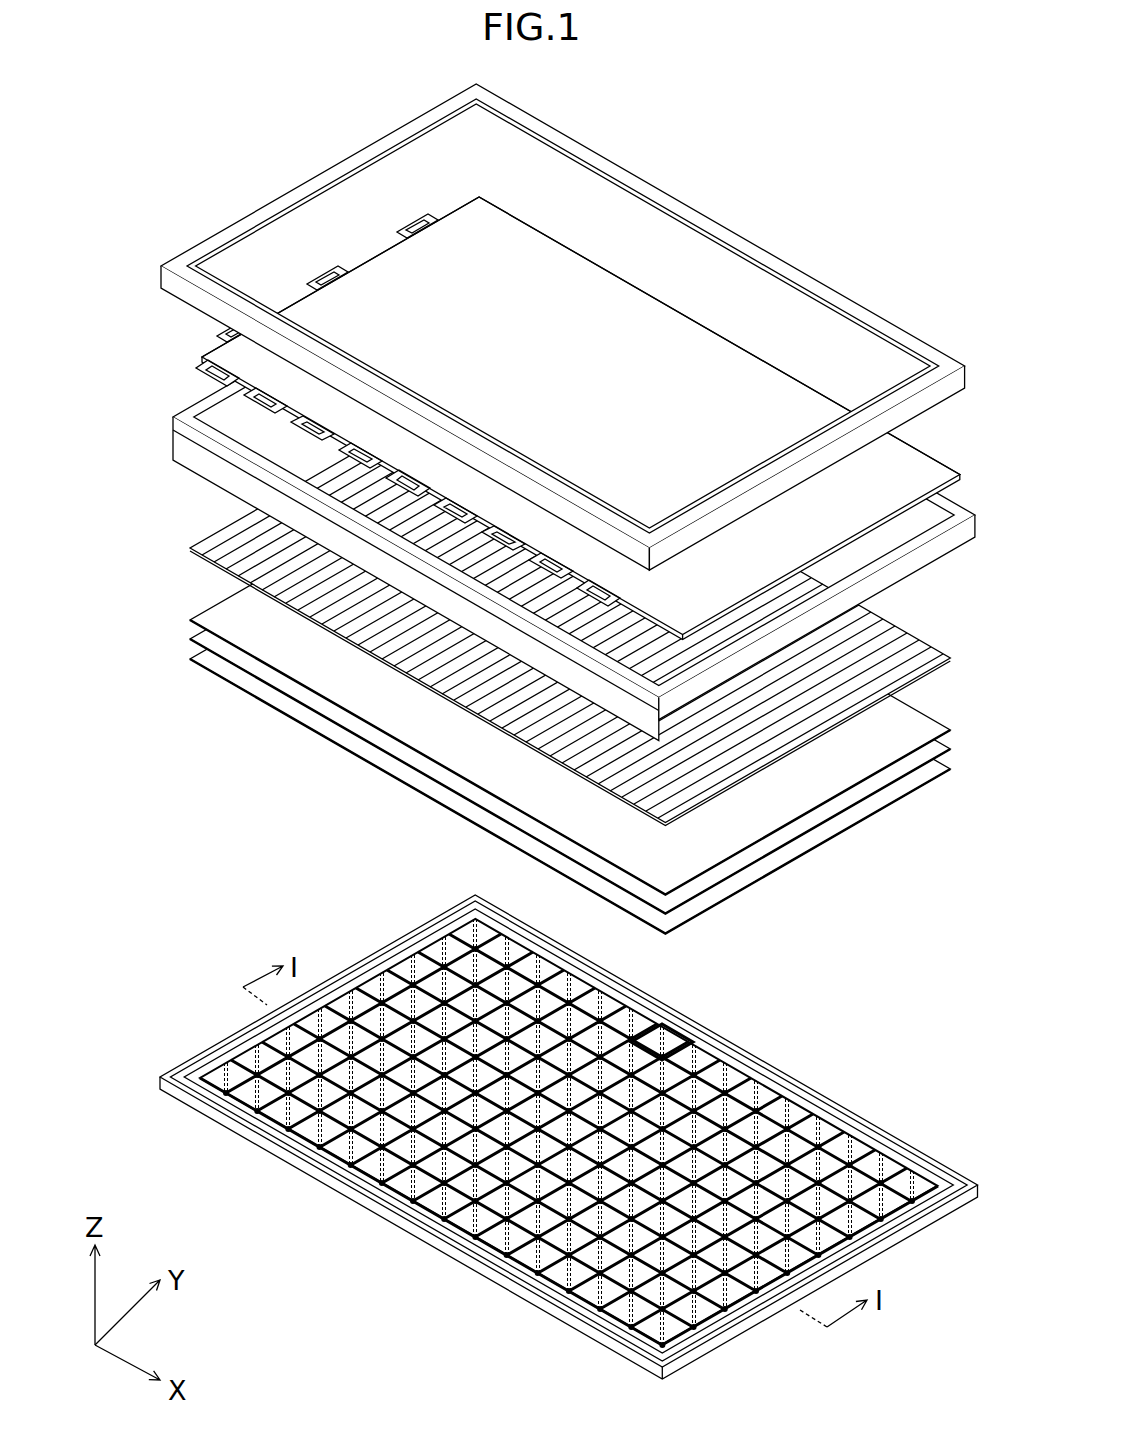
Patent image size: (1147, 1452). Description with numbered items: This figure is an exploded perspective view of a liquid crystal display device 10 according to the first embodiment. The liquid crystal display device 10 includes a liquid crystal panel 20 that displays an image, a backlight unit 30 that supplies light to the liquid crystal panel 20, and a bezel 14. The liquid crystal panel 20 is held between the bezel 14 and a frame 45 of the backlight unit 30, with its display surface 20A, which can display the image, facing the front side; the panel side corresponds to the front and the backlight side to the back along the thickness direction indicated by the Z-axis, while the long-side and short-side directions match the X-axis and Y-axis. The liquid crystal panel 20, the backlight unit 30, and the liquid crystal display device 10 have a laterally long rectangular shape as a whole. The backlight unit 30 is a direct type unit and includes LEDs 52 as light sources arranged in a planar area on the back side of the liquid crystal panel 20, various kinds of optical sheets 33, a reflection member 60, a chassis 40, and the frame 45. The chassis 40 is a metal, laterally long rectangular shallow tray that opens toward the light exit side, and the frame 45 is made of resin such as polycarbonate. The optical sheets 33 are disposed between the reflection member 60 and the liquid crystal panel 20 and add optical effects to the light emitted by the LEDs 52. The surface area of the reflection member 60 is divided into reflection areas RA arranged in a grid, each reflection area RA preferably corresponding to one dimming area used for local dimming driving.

The liquid crystal display device 10 is at (642, 84).
The bezel 14 is at (176, 262).
The liquid crystal panel 20 is at (543, 418).
The display surface 20A is at (678, 345).
The backlight unit 30 is at (526, 807).
The optical sheets 33 is at (190, 545).
The chassis 40 is at (366, 1195).
The frame 45 is at (551, 488).
The LEDs 52 is at (443, 965).
The reflection member 60 is at (372, 990).
The reflection areas RA is at (670, 1042).